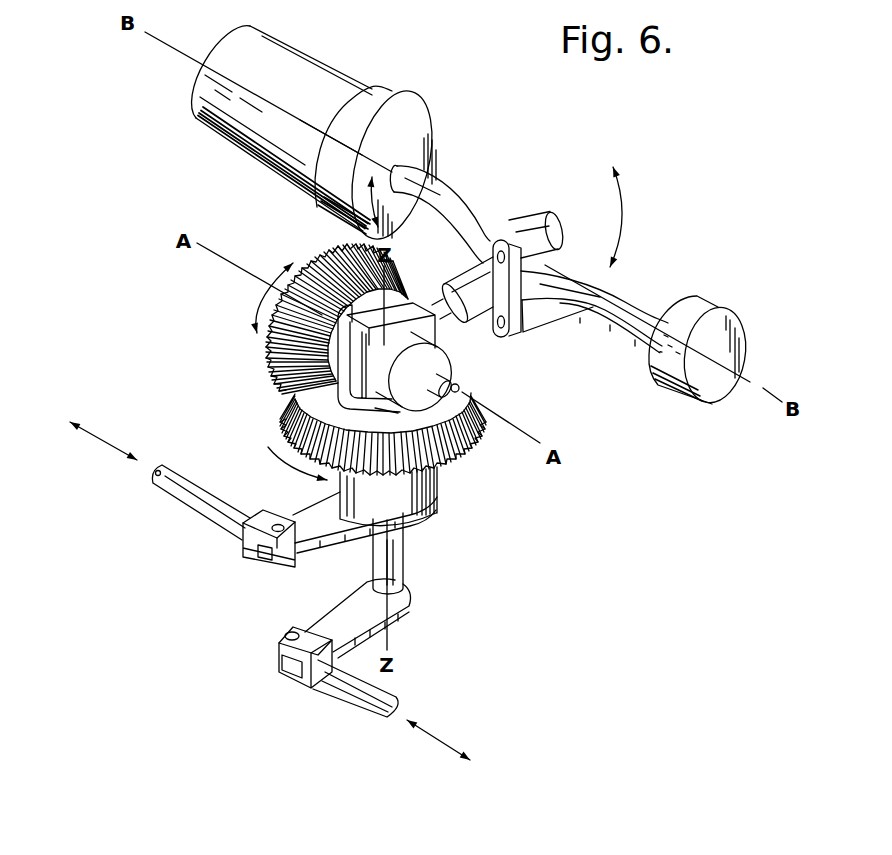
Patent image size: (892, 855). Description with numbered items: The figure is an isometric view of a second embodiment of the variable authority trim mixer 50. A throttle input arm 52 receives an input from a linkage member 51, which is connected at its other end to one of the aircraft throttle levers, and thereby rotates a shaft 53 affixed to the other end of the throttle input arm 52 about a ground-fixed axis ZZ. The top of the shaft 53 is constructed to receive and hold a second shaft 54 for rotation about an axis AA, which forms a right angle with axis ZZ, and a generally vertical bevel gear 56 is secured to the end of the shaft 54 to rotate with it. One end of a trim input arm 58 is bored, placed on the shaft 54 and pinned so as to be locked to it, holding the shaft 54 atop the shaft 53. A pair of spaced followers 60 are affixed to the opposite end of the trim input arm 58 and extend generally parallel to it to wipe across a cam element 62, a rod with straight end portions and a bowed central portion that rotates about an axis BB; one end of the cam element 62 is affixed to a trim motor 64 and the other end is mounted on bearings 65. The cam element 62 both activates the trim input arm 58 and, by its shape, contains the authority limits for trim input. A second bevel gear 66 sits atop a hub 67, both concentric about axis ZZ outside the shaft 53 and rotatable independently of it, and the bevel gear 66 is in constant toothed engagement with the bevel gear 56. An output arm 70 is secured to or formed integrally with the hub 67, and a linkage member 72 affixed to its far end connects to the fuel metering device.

The variable authority trim mixer 50 is at (222, 347).
The linkage member 51 is at (352, 702).
The throttle input arm 52 is at (348, 608).
The shaft 53 is at (393, 560).
The shaft 54 is at (465, 385).
The bevel gear 56 is at (317, 262).
The trim input arm 58 is at (450, 327).
The followers 60 is at (533, 220).
The cam element 62 is at (458, 207).
The trim motor 64 is at (317, 68).
The bearings 65 is at (690, 303).
The second bevel gear 66 is at (462, 453).
The hub 67 is at (435, 500).
The output arm 70 is at (313, 540).
The linkage member 72 is at (207, 515).